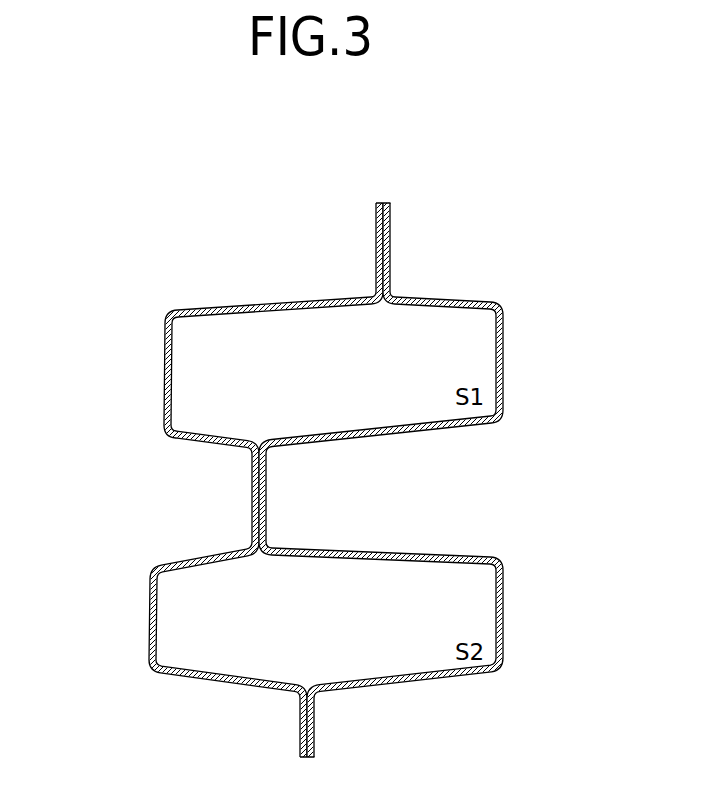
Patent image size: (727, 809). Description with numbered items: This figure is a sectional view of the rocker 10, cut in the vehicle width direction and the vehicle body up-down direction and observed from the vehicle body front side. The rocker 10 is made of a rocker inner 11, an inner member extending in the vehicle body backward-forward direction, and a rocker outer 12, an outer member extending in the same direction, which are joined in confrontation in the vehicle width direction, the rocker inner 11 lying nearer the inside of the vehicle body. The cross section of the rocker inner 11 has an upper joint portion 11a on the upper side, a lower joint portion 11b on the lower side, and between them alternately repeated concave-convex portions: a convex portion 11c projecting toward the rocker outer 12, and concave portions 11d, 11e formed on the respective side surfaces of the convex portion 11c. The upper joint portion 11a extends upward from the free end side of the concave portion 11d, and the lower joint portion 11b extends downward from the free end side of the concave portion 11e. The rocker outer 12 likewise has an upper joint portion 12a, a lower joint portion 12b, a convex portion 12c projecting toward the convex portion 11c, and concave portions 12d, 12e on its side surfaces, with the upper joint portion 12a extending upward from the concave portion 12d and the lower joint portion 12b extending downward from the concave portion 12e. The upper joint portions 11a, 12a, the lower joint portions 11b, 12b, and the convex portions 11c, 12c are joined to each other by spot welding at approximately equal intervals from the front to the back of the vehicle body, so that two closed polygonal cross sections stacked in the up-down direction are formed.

The rocker 10 is at (101, 240).
The rocker inner 11 is at (248, 306).
The rocker outer 12 is at (443, 300).
The upper joint portion 11a is at (376, 243).
The upper joint portion 12a is at (391, 237).
The lower joint portion 11b is at (300, 724).
The lower joint portion 12b is at (314, 724).
The convex portion 11c is at (252, 494).
The convex portion 12c is at (266, 494).
The concave portion 11d is at (167, 370).
The concave portion 12d is at (503, 358).
The concave portion 11e is at (150, 610).
The concave portion 12e is at (503, 616).